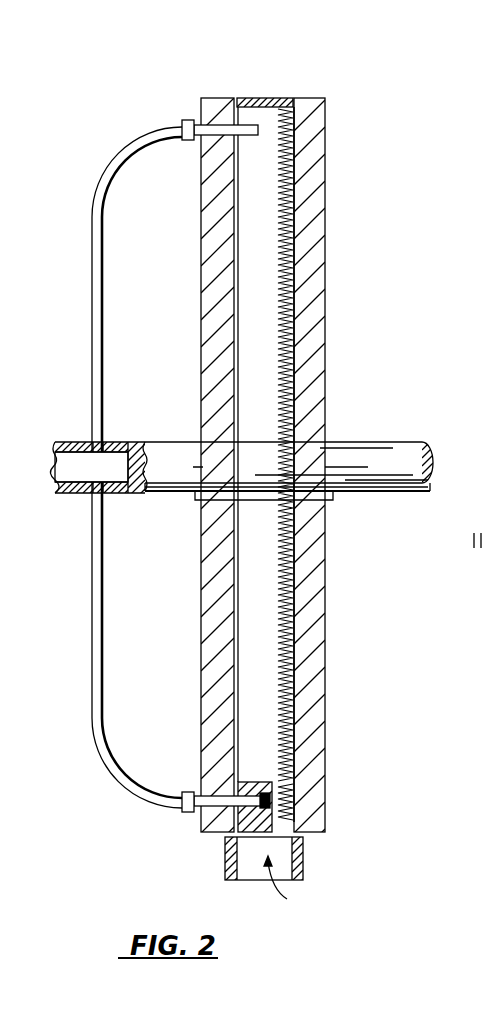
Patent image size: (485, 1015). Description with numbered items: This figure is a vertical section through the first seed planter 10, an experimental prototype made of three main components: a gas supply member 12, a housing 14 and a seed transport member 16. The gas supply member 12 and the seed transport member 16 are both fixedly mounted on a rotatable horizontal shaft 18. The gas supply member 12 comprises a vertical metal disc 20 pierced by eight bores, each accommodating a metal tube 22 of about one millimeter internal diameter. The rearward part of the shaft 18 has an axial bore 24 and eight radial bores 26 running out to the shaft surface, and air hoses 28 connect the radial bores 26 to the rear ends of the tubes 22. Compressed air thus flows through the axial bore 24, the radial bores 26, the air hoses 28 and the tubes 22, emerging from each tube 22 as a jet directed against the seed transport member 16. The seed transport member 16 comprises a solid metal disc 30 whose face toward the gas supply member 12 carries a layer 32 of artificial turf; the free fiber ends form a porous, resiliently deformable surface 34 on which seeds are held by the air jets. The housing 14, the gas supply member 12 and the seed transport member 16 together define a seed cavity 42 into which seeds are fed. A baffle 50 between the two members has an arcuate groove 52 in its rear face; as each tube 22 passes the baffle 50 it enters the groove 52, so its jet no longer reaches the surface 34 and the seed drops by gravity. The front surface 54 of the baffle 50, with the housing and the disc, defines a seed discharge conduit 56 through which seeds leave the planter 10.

The seed planter 10 is at (340, 66).
The gas supply member 12 is at (220, 90).
The housing 14 is at (265, 90).
The seed transport member 16 is at (312, 126).
The rotatable horizontal shaft 18 is at (373, 457).
The metal disc 20 is at (218, 354).
The metal tube 22 is at (212, 130).
The axial bore 24 is at (95, 476).
The radial bores 26 is at (98, 446).
The air hoses 28 is at (95, 331).
The metal disc 30 is at (322, 367).
The layer of artificial turf 32 is at (296, 316).
The porous surface 34 is at (290, 243).
The seed cavity 42 is at (245, 575).
The baffle 50 is at (268, 836).
The arcuate groove 52 is at (293, 787).
The front surface of the baffle 54 is at (298, 802).
The seed discharge conduit 56 is at (287, 884).